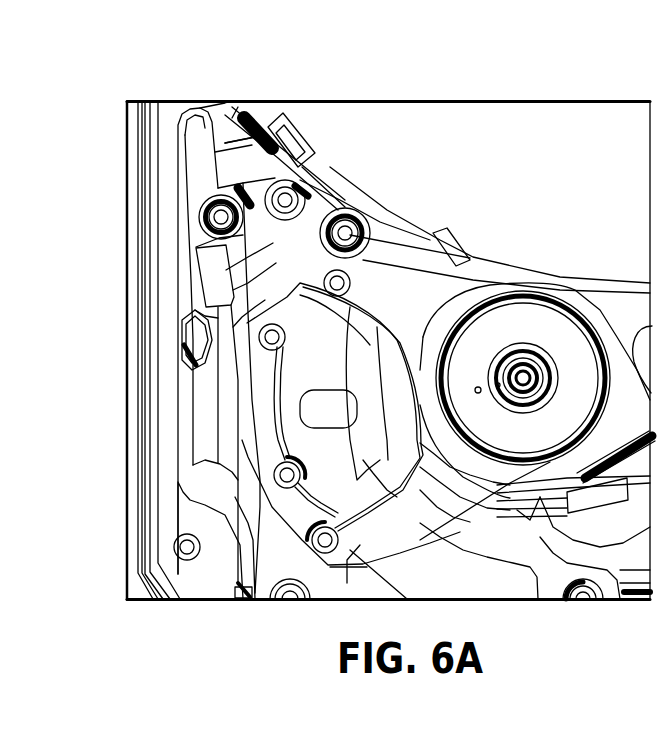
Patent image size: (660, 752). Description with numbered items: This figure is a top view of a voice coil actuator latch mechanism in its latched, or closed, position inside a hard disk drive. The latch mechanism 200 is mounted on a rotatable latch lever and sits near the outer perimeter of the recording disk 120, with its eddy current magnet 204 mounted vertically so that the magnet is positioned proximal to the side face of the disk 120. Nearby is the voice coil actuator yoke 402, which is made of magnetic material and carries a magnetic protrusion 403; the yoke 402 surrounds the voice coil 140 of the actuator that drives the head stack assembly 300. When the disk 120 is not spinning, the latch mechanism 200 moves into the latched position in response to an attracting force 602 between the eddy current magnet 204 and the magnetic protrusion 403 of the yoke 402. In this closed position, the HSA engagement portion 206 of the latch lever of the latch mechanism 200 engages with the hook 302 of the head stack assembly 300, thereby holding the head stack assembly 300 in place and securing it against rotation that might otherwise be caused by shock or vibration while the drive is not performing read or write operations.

The recording disk 120 is at (636, 150).
The latch mechanism 200 is at (169, 350).
The HSA engagement portion 206 is at (140, 331).
The hook 302 is at (183, 318).
The voice coil 140 is at (335, 477).
The voice coil actuator yoke 402 is at (316, 623).
The head stack assembly 300 is at (522, 473).
The magnetic protrusion 403 is at (220, 80).
The attracting force 602 is at (437, 158).
The eddy current magnet 204 is at (369, 153).